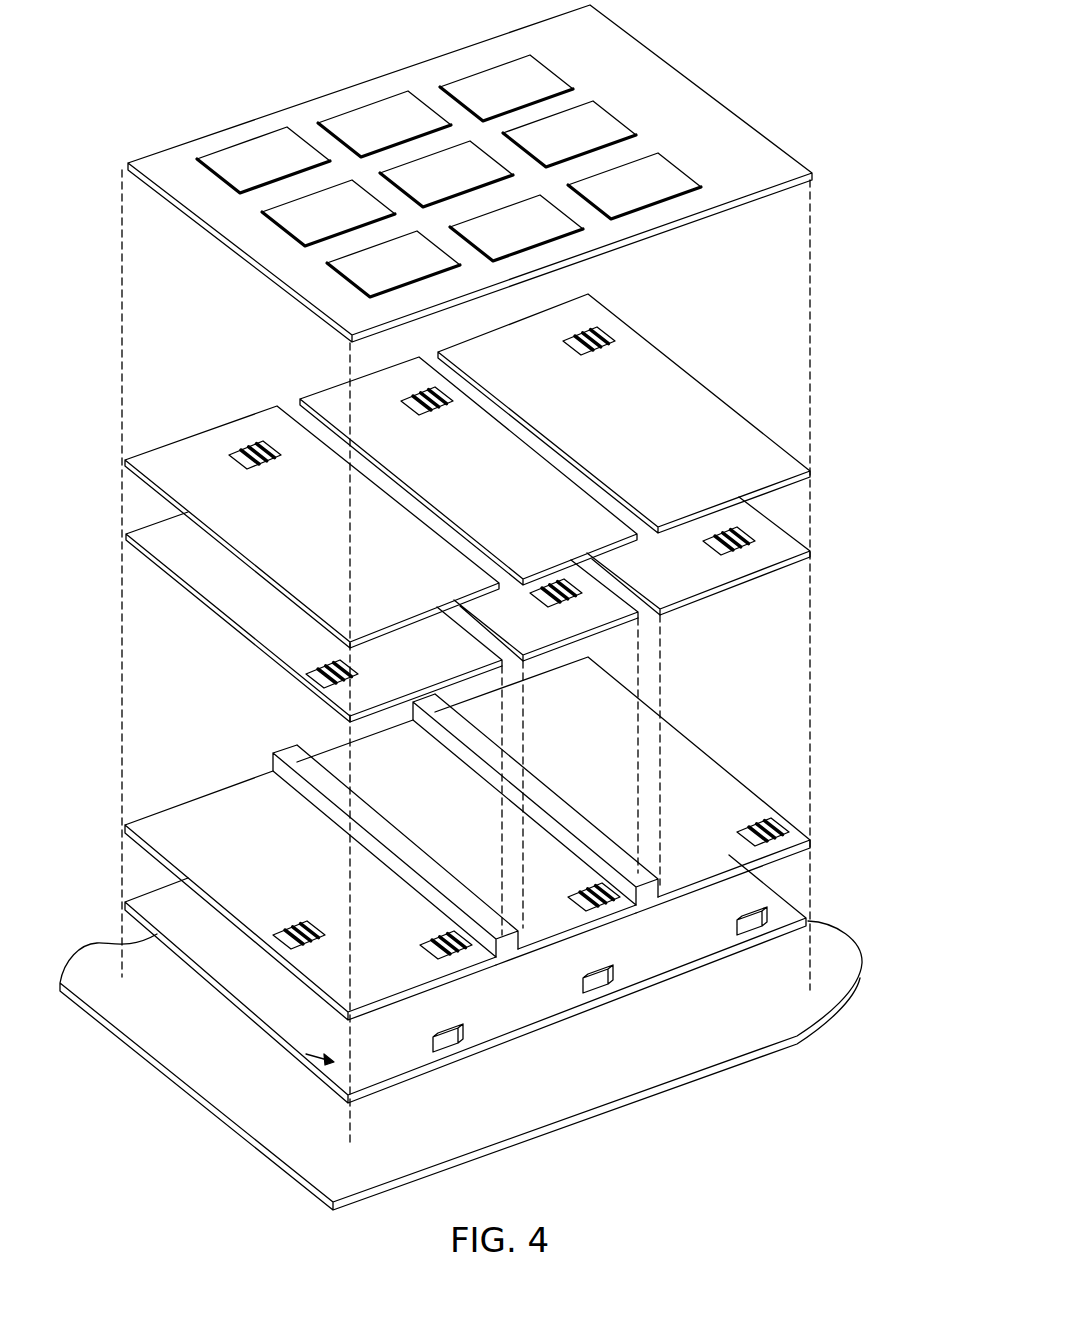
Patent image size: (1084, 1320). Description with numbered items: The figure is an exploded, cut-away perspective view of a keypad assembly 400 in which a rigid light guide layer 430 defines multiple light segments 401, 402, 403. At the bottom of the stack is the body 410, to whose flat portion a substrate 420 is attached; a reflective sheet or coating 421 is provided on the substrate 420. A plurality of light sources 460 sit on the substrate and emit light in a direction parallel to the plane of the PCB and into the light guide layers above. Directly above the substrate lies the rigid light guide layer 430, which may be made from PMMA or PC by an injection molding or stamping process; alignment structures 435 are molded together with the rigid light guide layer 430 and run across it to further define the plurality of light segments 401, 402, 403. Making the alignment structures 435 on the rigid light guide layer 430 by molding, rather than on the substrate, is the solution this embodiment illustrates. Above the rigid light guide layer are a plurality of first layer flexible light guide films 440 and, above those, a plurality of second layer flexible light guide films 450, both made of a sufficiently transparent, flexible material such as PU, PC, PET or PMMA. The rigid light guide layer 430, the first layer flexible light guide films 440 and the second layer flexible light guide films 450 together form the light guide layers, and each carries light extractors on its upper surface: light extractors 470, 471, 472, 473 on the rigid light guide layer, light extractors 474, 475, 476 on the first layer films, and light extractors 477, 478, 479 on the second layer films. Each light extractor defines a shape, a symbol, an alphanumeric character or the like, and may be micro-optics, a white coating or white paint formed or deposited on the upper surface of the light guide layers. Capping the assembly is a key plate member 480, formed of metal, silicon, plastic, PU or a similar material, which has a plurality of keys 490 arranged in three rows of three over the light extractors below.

The keypad assembly 400 is at (769, 54).
The body 410 is at (228, 1059).
The substrate 420 is at (218, 949).
The reflective sheet or coating 421 is at (304, 1057).
The rigid light guide layer 430 is at (467, 838).
The light segment 401 is at (315, 877).
The light segment 402 is at (473, 833).
The light segment 403 is at (607, 782).
The alignment structures 435 is at (313, 791).
The first layer flexible light guide films 440 is at (255, 611).
The second layer flexible light guide films 450 is at (316, 551).
The light sources 460 is at (453, 1043).
The light extractor 470 is at (281, 946).
The light extractor 471 is at (434, 951).
The light extractor 472 is at (582, 903).
The light extractor 473 is at (748, 843).
The light extractor 474 is at (314, 684).
The light extractor 475 is at (536, 601).
The light extractor 476 is at (711, 549).
The light extractor 477 is at (239, 462).
The light extractor 478 is at (410, 409).
The light extractor 479 is at (573, 350).
The key plate member 480 is at (232, 215).
The keys 490 is at (547, 66).